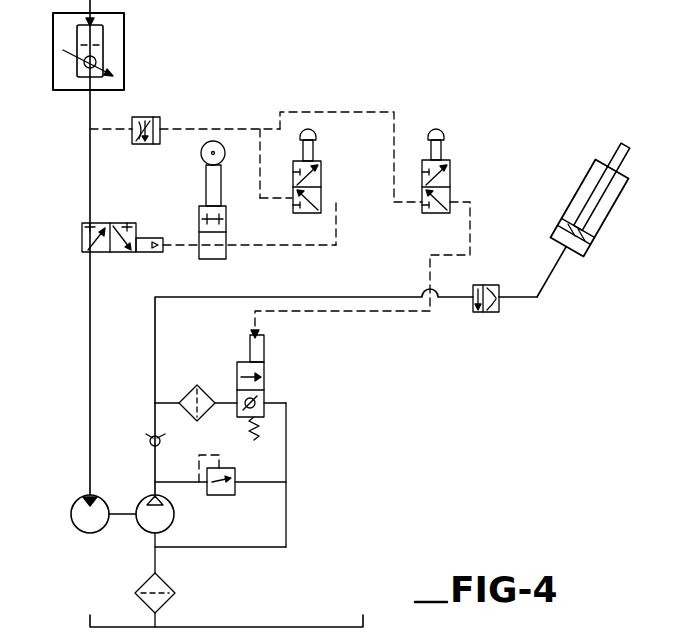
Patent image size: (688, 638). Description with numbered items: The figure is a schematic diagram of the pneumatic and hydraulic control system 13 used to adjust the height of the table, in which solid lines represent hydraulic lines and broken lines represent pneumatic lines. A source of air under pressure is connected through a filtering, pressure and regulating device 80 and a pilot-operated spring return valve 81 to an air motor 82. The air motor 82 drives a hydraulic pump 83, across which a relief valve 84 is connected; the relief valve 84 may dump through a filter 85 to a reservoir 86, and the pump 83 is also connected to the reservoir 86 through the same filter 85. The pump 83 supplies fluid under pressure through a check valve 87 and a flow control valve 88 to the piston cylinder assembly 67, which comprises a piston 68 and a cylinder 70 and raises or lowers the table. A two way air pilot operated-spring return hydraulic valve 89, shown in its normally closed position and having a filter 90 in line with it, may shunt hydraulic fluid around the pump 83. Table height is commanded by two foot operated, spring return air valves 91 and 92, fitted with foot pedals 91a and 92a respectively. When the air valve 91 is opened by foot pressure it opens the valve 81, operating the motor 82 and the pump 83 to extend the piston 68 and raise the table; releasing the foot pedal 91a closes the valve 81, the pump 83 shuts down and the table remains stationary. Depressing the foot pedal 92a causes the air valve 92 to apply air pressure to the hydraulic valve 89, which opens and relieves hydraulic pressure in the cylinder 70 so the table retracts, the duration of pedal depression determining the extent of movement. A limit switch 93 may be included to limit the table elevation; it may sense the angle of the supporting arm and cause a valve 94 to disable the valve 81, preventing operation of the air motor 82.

The hydraulic system 13 is at (434, 427).
The piston cylinder assembly 67 is at (570, 184).
The piston 68 is at (630, 152).
The cylinder 70 is at (610, 218).
The filtering, pressure and regulating device 80 is at (125, 58).
The pilot-operated spring return valve 81 is at (116, 223).
The air motor 82 is at (76, 529).
The hydraulic pump 83 is at (174, 520).
The relief valve 84 is at (225, 495).
The filter 85 is at (170, 582).
The reservoir 86 is at (258, 627).
The check valve 87 is at (150, 446).
The flow control valve 88 is at (493, 312).
The two way air pilot operated-spring return hydraulic valve 89 is at (264, 377).
The filter 90 is at (190, 394).
The foot operated, spring return air valve 91 is at (321, 196).
The foot pedal 91a is at (314, 132).
The foot operated, spring return air valve 92 is at (450, 180).
The foot pedal 92a is at (437, 129).
The limit switch 93 is at (202, 142).
The valve 94 is at (226, 240).